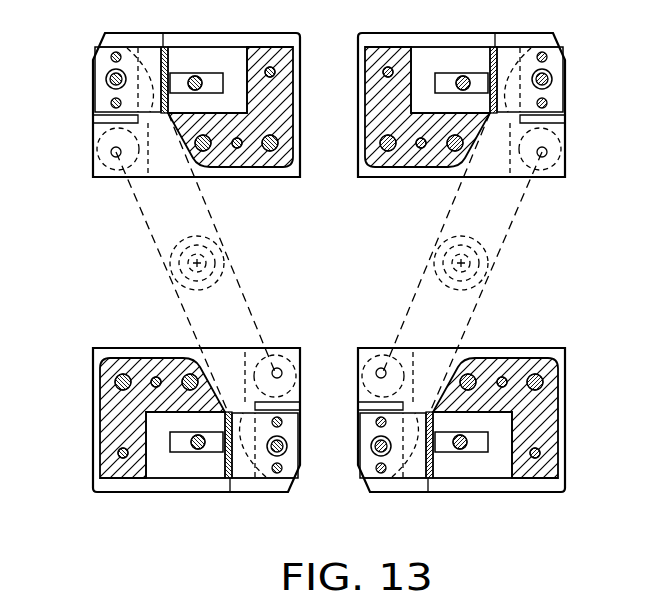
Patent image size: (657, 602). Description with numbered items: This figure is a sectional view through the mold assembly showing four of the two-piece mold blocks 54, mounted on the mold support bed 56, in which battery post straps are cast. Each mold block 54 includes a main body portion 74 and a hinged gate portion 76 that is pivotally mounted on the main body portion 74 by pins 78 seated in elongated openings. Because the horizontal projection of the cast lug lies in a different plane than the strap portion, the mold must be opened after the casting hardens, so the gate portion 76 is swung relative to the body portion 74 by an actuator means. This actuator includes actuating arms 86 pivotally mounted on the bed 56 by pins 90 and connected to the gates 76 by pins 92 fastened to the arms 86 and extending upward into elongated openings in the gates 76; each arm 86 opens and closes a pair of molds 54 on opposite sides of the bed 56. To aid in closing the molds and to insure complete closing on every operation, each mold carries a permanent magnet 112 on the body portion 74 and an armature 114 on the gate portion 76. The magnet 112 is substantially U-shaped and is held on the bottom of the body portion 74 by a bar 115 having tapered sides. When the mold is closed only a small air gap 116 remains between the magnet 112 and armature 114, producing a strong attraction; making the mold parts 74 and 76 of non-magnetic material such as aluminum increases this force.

The mold block 54 is at (331, 265).
The mold support bed 56 is at (258, 165).
The main body portion 74 is at (301, 100).
The hinged gate portion 76 is at (104, 35).
The pin 78 is at (110, 153).
The actuating arm 86 is at (150, 230).
The pin 90 is at (175, 265).
The pin 92 is at (105, 80).
The permanent magnet 112 is at (233, 55).
The armature 114 is at (150, 50).
The bar 115 is at (208, 75).
The air gap 116 is at (215, 478).